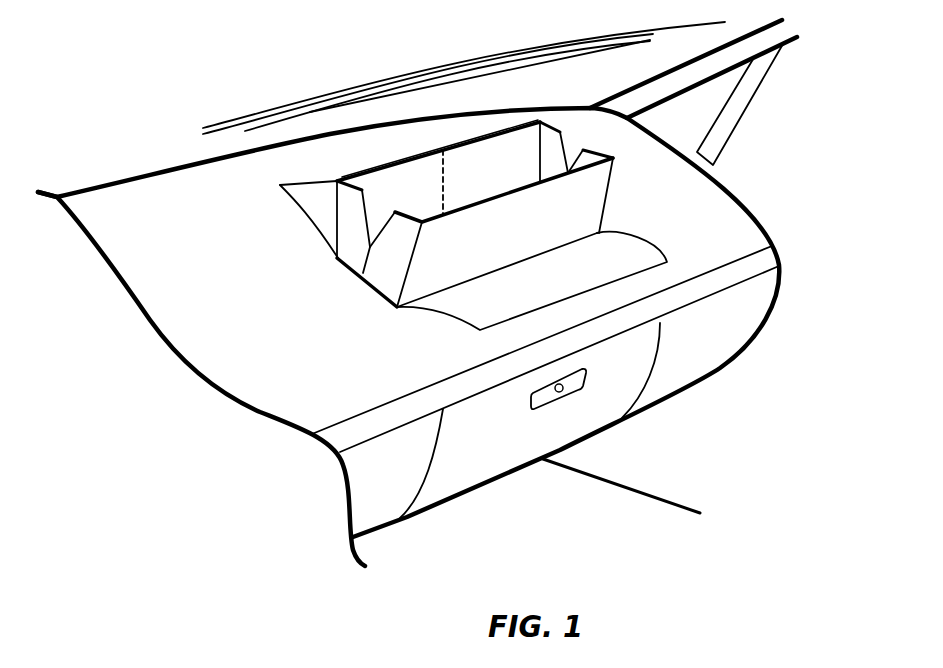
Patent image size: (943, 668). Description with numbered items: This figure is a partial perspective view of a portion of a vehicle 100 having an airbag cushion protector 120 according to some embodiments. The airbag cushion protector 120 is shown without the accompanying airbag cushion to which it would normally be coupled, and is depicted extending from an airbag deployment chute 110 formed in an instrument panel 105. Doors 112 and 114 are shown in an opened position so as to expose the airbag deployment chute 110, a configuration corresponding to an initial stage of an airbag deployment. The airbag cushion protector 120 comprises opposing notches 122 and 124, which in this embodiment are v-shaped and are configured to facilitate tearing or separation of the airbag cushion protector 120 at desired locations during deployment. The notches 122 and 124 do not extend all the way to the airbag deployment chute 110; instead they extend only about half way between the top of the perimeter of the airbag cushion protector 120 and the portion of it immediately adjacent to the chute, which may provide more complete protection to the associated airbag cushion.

The vehicle 100 is at (178, 108).
The instrument panel 105 is at (737, 227).
The airbag deployment chute 110 is at (376, 295).
The door 112 is at (590, 280).
The door 114 is at (317, 187).
The airbag cushion protector 120 is at (613, 196).
The notch 122 is at (570, 149).
The notch 124 is at (363, 220).